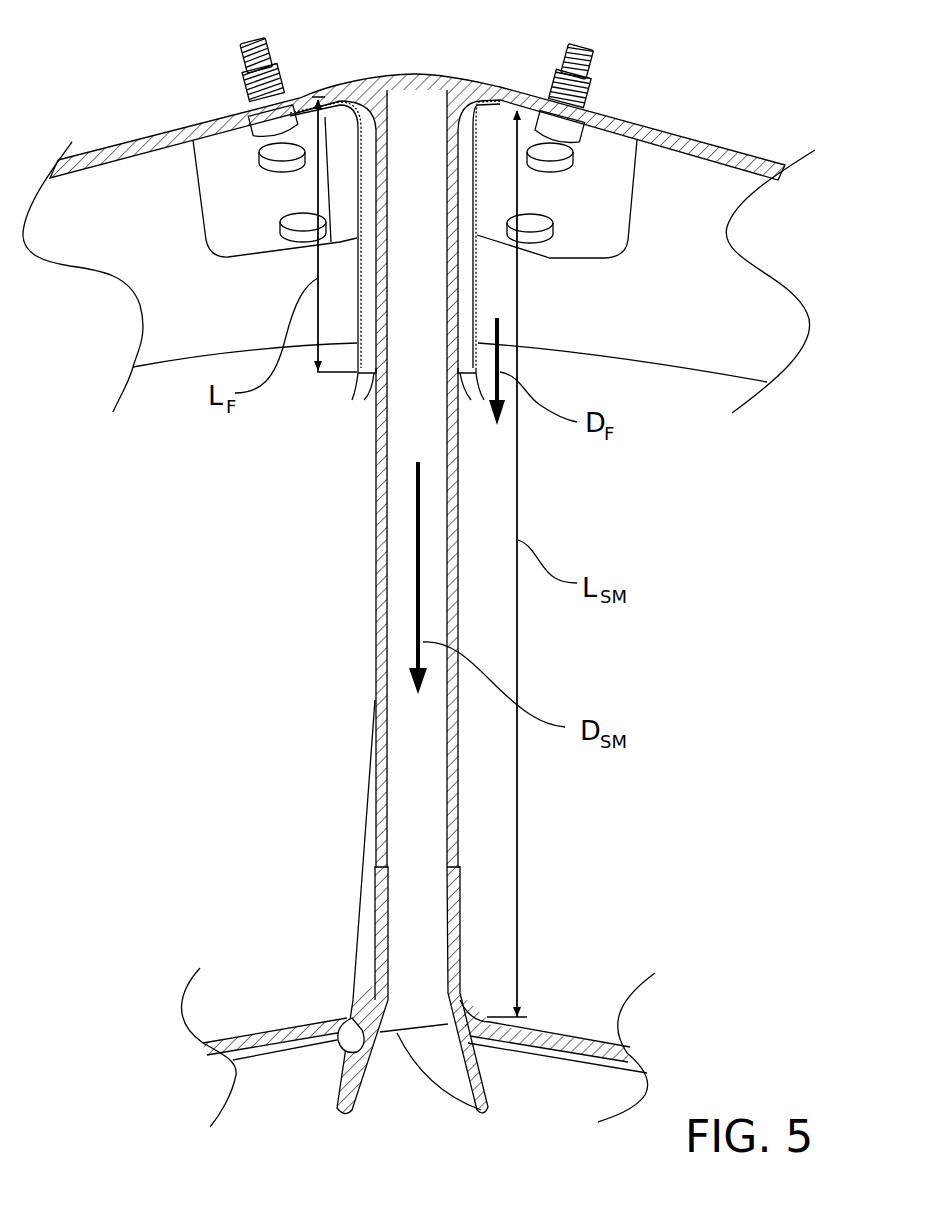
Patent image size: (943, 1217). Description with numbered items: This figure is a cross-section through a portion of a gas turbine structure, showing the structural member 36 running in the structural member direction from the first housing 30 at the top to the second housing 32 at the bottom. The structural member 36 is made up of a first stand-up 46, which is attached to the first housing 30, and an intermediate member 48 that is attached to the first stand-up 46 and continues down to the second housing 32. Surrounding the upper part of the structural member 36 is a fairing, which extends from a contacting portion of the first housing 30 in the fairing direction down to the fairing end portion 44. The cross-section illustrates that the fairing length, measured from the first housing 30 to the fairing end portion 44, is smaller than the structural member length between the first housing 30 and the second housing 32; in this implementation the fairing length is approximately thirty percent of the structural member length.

The first housing 30 is at (689, 126).
The second housing 32 is at (559, 1019).
The structural member 36 is at (466, 604).
The fairing end portion 44 is at (368, 376).
The first stand-up 46 is at (385, 132).
The intermediate member 48 is at (378, 582).